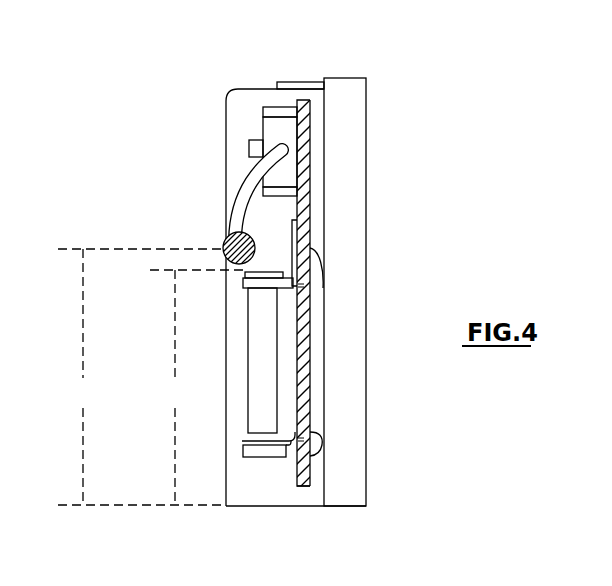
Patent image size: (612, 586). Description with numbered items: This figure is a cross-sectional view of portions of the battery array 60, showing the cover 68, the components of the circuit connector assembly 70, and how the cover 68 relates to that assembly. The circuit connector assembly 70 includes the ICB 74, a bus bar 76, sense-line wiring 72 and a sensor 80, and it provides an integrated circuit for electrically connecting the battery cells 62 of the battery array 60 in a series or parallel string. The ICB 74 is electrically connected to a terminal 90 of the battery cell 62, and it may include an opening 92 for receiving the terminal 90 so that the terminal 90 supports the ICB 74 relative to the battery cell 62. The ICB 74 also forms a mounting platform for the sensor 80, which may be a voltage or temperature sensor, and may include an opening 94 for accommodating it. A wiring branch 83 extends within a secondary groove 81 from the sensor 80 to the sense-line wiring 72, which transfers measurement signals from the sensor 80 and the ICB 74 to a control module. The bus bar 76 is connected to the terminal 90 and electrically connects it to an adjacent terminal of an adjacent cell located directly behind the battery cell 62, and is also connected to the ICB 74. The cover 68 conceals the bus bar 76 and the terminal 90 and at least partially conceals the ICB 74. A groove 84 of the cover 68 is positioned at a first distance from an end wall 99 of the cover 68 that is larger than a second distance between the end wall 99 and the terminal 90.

The battery array 60 is at (251, 288).
The battery cell 62 is at (362, 371).
The cover 68 is at (236, 121).
The circuit connector assembly 70 is at (333, 240).
The sense-line wiring 72 is at (226, 240).
The ICB 74 is at (307, 473).
The bus bar 76 is at (257, 357).
The sensor 80 is at (279, 133).
The secondary groove 81 is at (282, 193).
The wiring branch 83 is at (250, 178).
The groove 84 is at (258, 252).
The terminal 90 is at (317, 412).
The opening 92 is at (307, 447).
The opening 94 is at (310, 150).
The end wall 99 is at (268, 506).